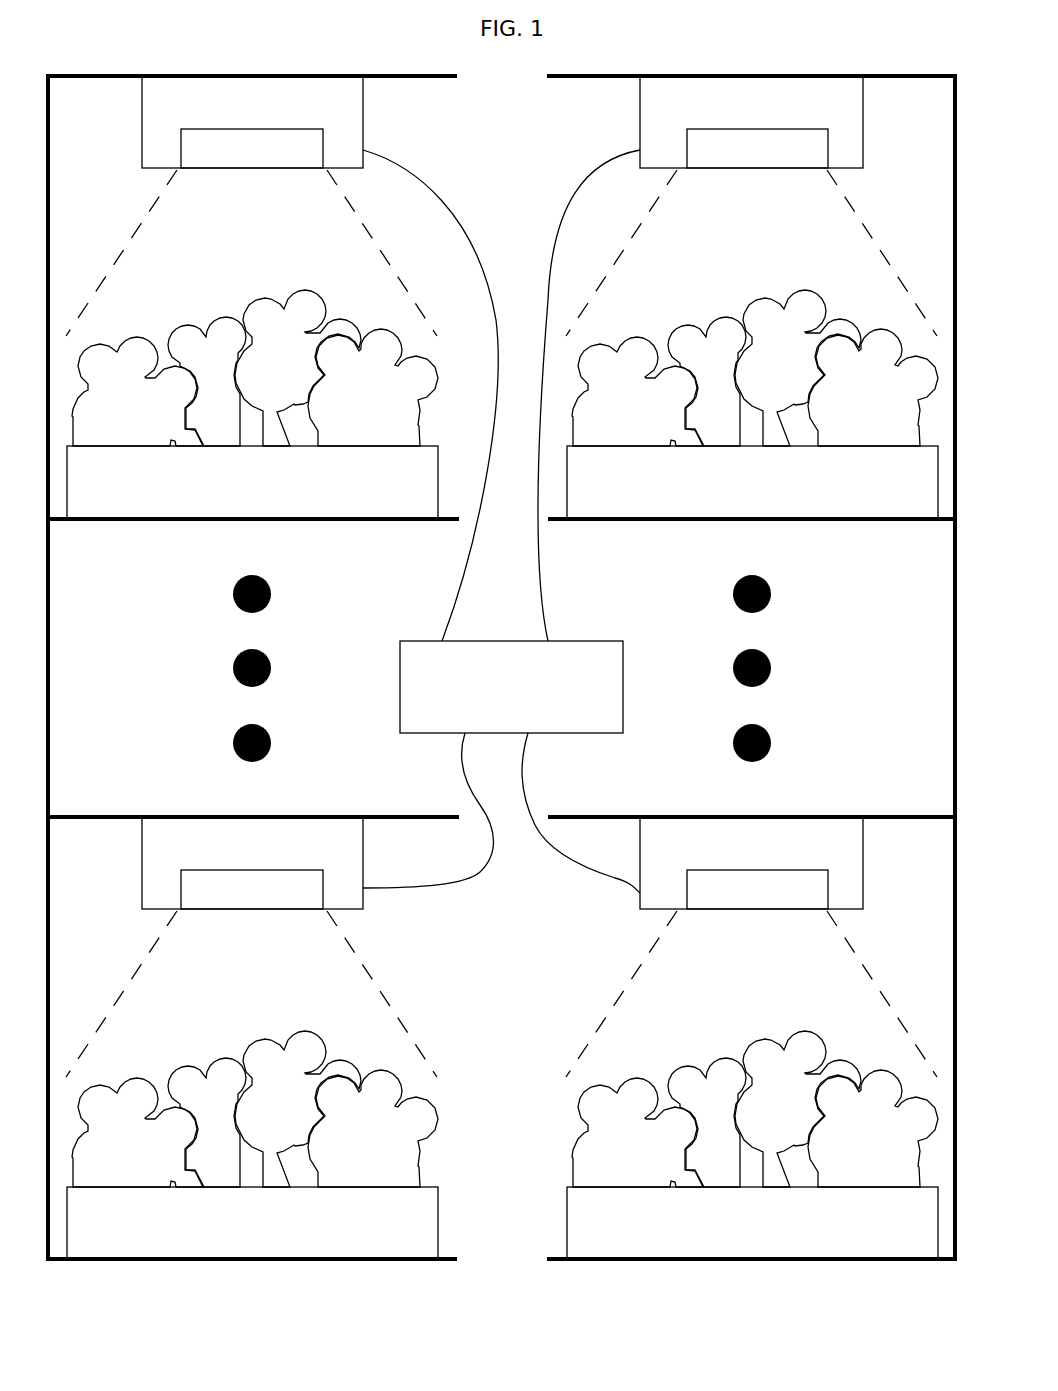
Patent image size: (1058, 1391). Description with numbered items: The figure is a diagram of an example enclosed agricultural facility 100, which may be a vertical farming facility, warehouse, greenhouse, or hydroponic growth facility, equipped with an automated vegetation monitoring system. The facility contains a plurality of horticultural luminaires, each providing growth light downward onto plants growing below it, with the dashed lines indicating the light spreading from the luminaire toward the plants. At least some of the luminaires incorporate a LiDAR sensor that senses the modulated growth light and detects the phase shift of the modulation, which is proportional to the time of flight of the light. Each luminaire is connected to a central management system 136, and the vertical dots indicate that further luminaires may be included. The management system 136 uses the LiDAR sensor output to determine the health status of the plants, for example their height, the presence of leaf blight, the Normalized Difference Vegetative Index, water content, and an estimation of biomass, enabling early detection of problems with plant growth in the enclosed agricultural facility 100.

The enclosed agricultural facility 100 is at (492, 625).
The management system 136 is at (492, 700).